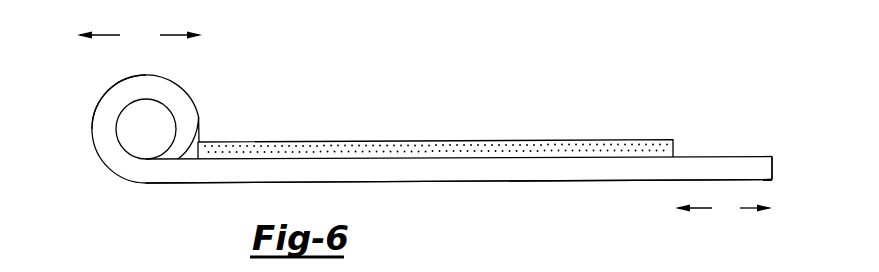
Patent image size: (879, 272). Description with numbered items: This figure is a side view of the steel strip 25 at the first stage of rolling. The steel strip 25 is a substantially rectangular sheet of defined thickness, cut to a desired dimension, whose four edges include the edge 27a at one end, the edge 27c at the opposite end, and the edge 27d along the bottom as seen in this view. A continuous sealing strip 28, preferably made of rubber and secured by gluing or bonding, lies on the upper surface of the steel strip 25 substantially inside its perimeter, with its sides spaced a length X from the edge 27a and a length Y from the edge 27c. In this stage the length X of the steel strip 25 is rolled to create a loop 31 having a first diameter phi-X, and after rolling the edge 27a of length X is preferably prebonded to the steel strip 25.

The steel strip 25 is at (700, 156).
The edge 27a is at (198, 132).
The edge 27c is at (772, 166).
The edge 27d is at (365, 182).
The sealing strip 28 is at (357, 142).
The loop 31 is at (115, 130).